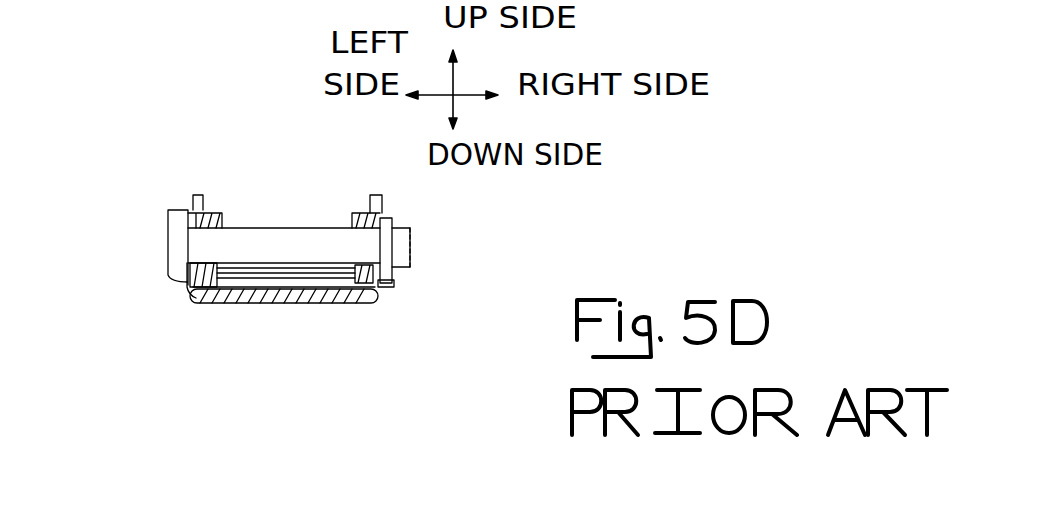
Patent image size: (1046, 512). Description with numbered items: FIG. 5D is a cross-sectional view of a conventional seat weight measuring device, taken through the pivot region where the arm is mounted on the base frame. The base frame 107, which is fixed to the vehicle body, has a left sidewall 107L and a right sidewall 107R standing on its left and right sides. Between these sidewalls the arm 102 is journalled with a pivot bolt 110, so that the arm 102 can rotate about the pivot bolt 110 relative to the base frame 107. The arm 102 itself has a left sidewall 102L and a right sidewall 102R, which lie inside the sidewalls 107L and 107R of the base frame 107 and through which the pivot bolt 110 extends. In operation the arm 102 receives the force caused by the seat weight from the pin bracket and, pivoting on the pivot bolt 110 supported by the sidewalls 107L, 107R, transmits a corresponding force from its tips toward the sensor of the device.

The pivot bolt 110 is at (311, 245).
The left sidewall of base frame 107L is at (193, 205).
The right sidewall of base frame 107R is at (380, 207).
The left sidewall of arm 102L is at (247, 173).
The right sidewall of arm 102R is at (367, 213).
The arm 102 is at (207, 300).
The base frame 107 is at (318, 305).